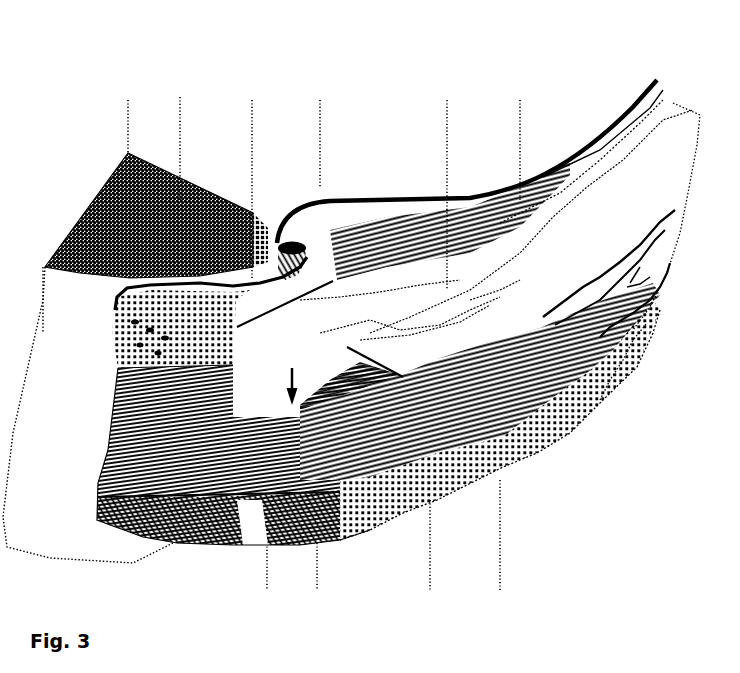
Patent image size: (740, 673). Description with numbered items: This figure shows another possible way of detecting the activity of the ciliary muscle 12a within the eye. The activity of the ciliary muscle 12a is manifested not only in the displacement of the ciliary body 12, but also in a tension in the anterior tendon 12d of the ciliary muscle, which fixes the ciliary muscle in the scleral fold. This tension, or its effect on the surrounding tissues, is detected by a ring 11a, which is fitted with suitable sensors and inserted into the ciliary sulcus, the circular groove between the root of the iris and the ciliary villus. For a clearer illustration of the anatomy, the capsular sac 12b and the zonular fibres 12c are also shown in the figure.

The ring 11a is at (293, 247).
The ciliary body 12 is at (350, 213).
The ciliary muscle 12a is at (383, 233).
The capsular sac 12b is at (183, 175).
The zonular fibres 12c is at (262, 210).
The anterior tendon 12d is at (271, 386).